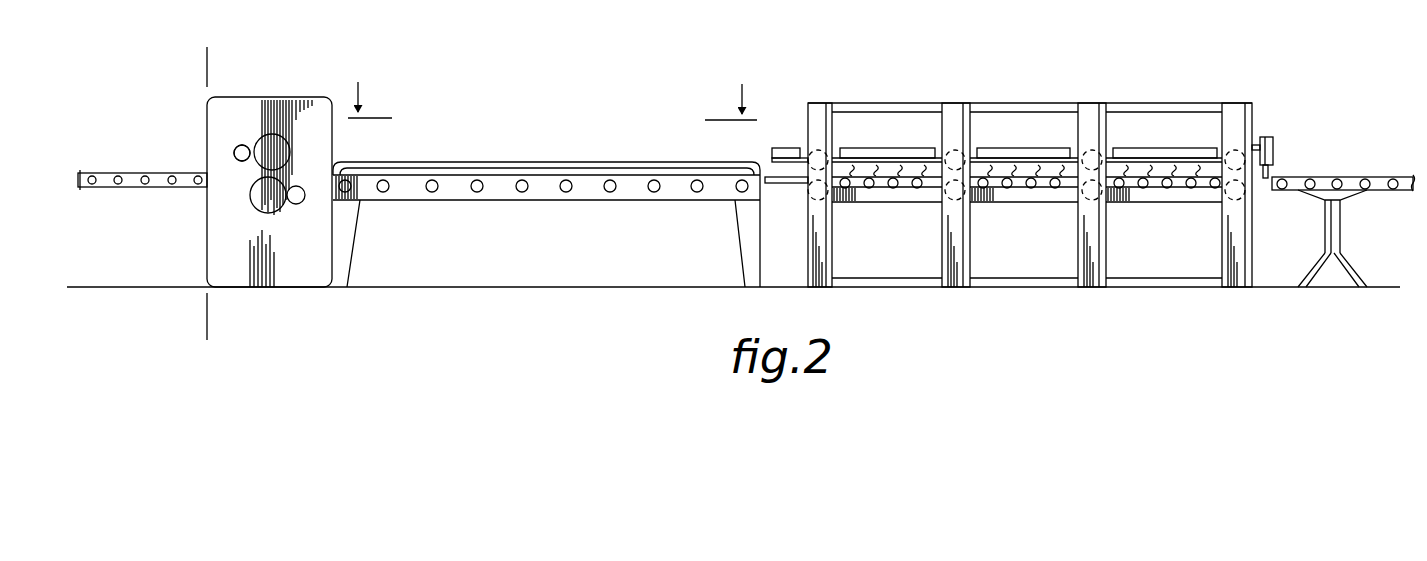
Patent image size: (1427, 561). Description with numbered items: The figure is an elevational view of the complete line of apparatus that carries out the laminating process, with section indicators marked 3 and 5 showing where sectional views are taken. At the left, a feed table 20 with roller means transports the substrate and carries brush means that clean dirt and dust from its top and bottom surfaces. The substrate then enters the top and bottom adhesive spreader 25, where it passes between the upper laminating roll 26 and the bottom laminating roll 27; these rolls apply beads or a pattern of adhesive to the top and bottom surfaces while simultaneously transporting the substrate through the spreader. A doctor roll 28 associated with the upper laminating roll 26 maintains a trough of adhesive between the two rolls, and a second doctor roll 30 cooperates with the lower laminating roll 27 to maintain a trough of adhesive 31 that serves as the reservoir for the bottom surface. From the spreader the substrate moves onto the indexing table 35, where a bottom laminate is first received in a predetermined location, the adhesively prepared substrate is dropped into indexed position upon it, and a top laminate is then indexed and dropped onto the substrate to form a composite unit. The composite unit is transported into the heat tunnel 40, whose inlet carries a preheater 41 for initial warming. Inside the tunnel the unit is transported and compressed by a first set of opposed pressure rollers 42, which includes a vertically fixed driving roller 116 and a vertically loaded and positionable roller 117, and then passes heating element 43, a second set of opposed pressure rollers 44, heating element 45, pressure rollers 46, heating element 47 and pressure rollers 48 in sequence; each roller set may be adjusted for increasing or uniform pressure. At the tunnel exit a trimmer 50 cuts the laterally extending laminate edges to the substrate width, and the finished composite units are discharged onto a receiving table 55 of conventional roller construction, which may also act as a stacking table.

The section line 3- 3 is at (200, 55).
The section line 5- 5 is at (552, 90).
The feed table 20 is at (134, 190).
The top and bottom adhesive spreader 25 is at (306, 292).
The upper laminating roll 26 is at (282, 138).
The bottom laminating roll 27 is at (254, 203).
The doctor roll 28 is at (235, 149).
The doctor roll 30 is at (305, 201).
The trough of adhesive 31 is at (248, 144).
The indexing table 35 is at (538, 205).
The heat tunnel 40 is at (1029, 249).
The preheater 41 is at (777, 147).
The first set of opposed pressure rollers 42 is at (824, 140).
The heating element 43 is at (901, 147).
The second set of opposed pressure rollers 44 is at (956, 150).
The heating element 45 is at (1014, 147).
The pressure rollers 46 is at (1093, 150).
The heating element 47 is at (1151, 147).
The pressure rollers 48 is at (1236, 150).
The trimmer 50 is at (1266, 136).
The receiving table 55 is at (1377, 176).
The driving roller 116 is at (827, 200).
The positionable roller 117 is at (819, 150).